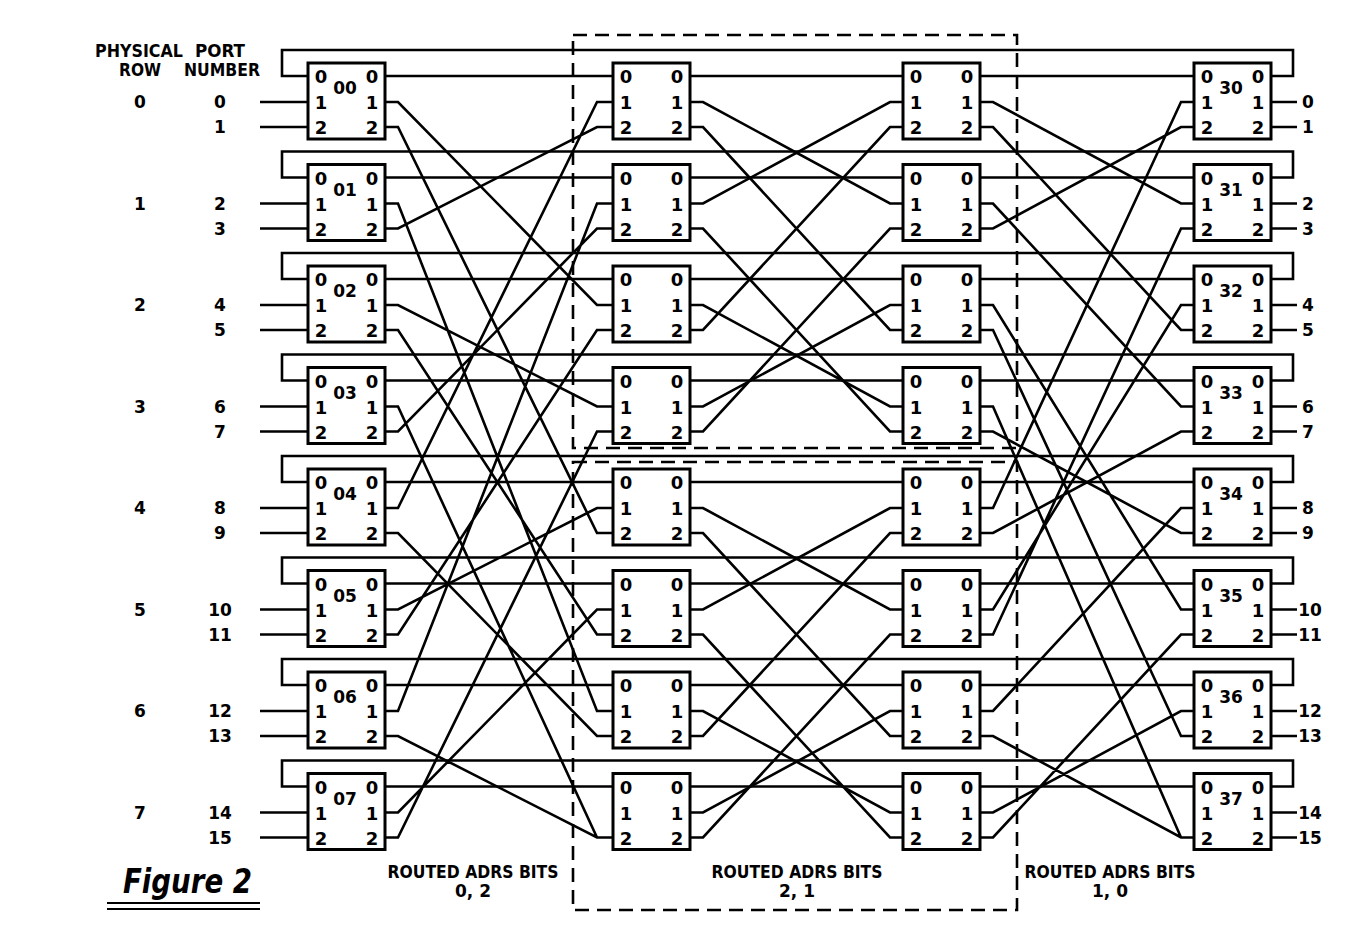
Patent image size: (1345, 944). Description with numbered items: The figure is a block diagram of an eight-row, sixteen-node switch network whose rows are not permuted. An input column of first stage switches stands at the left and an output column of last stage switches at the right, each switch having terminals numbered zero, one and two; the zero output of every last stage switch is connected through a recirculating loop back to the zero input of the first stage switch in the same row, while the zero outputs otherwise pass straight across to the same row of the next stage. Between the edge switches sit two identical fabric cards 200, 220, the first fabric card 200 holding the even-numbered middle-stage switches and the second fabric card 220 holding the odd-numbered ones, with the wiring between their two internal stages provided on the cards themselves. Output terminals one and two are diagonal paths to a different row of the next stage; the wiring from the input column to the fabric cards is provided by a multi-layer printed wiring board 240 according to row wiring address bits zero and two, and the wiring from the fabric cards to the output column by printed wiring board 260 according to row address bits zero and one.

The fabric card 200 is at (767, 426).
The second fabric card 220 is at (734, 639).
The printed wiring board 240 is at (527, 365).
The printed wiring board 260 is at (1078, 207).